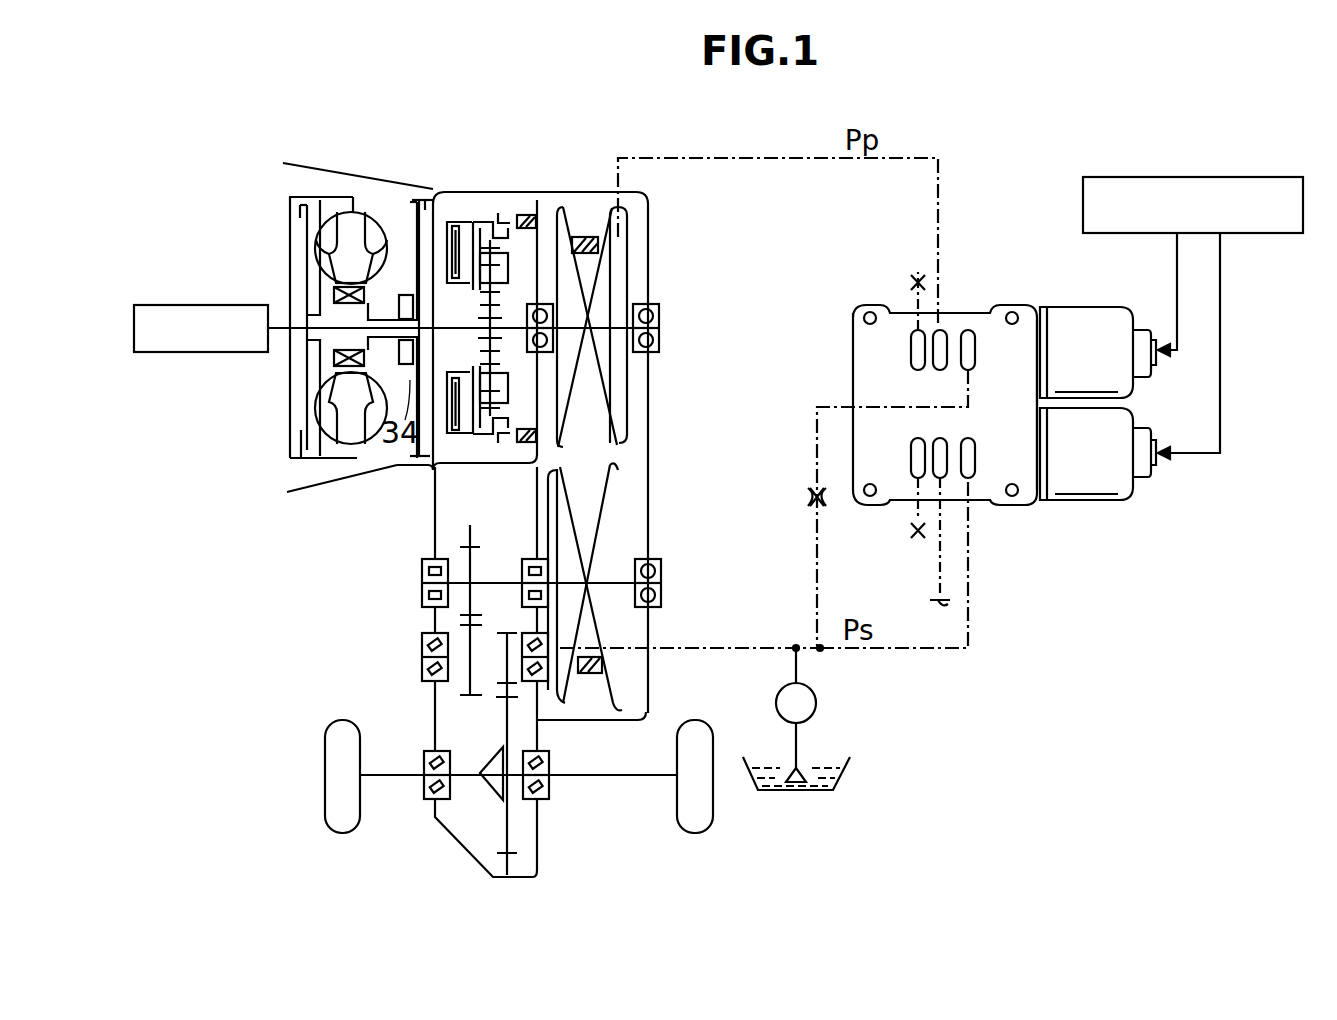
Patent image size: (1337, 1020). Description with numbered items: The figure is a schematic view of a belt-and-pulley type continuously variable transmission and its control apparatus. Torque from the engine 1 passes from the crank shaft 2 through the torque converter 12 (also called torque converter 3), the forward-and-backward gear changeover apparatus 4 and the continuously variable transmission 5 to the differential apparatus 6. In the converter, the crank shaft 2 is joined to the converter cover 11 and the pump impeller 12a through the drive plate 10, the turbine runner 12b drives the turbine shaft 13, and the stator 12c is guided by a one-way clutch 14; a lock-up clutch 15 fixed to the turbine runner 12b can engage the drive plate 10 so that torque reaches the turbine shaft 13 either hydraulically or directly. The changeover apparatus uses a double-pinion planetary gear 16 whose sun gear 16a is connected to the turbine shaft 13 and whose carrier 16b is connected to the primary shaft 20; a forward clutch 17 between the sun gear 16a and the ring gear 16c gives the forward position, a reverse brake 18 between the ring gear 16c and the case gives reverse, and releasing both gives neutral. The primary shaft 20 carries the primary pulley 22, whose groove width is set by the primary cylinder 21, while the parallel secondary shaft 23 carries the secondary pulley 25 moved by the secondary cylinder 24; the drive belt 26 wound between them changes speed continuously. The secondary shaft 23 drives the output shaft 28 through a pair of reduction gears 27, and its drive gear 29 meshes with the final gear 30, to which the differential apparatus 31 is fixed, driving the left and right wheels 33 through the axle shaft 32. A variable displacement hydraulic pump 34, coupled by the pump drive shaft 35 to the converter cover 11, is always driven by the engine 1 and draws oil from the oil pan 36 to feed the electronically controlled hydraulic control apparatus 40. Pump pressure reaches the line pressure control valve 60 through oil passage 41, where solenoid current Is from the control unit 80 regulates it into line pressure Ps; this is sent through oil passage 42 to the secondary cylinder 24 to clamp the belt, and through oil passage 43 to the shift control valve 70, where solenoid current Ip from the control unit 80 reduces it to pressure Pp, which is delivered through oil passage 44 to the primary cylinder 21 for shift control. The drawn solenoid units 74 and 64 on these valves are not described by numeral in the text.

The engine 1 is at (200, 352).
The crank shaft 2 is at (284, 330).
The torque converter 3 is at (360, 202).
The forward-and-backward gear changeover apparatus 4 is at (470, 196).
The belt-and-pulley type continuously variable transmission 5 is at (590, 215).
The differential apparatus 6 is at (500, 835).
The drive plate 10 is at (292, 252).
The converter cover 11 is at (307, 197).
The torque converter 12 is at (375, 205).
The pump impeller 12a is at (392, 229).
The turbine runner 12b is at (318, 245).
The stator 12c is at (335, 277).
The turbine shaft 13 is at (420, 330).
The one-way clutch 14 is at (334, 295).
The lock-up clutch 15 is at (297, 210).
The double-pinion type planetary gear 16 is at (488, 212).
The sun gear 16a is at (490, 312).
The carrier 16b is at (490, 272).
The ring gear 16c is at (492, 240).
The forward clutch 17 is at (452, 225).
The reverse brake 18 is at (524, 214).
The primary shaft 20 is at (565, 345).
The primary cylinder 21 is at (612, 240).
The primary pulley 22 is at (572, 210).
The secondary shaft 23 is at (480, 577).
The secondary cylinder 24 is at (550, 510).
The secondary pulley 25 is at (600, 518).
The drive belt 26 is at (578, 680).
The reduction gears 27 is at (470, 545).
The output shaft 28 is at (470, 690).
The drive gear 29 is at (503, 630).
The final gear 30 is at (517, 857).
The differential apparatus 31 is at (490, 795).
The axle shaft 32 is at (380, 773).
The left and right wheels 33 is at (328, 780).
The variable displacement type hydraulic pump 34 is at (818, 705).
The pump drive shaft 35 is at (403, 362).
The oil pan 36 is at (852, 778).
The electronically controlled hydraulic control apparatus 40 is at (975, 660).
The oil passage 41 is at (928, 650).
The oil passage 42 is at (752, 648).
The oil passage 43 is at (817, 560).
The oil passage 44 is at (768, 158).
The line pressure control valve 60 is at (1010, 505).
The secondary solenoid 64 is at (1118, 502).
The shift control valve 70 is at (1010, 312).
The primary solenoid 74 is at (1088, 307).
The control unit 80 is at (1110, 177).